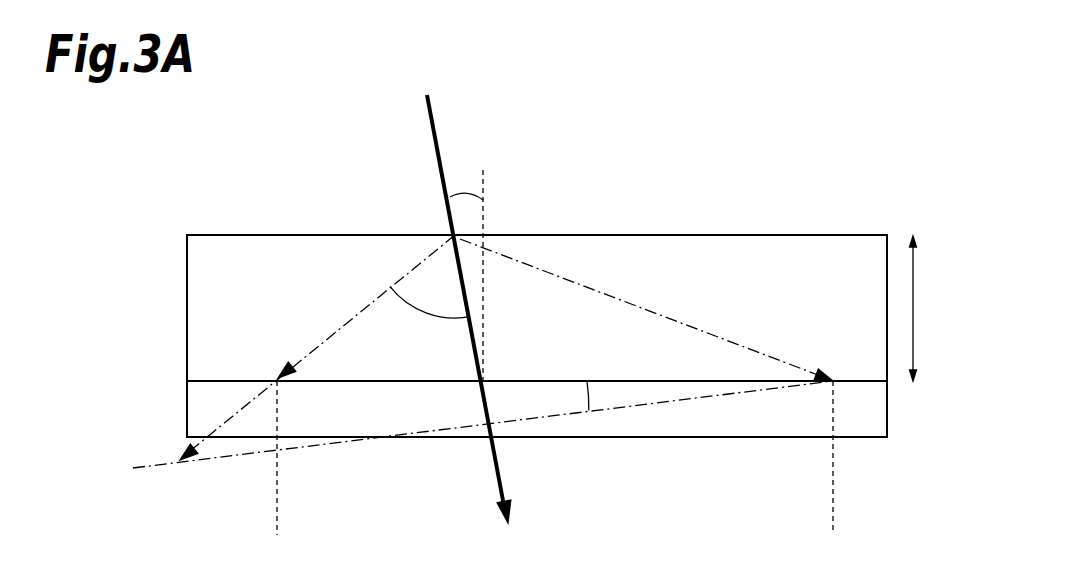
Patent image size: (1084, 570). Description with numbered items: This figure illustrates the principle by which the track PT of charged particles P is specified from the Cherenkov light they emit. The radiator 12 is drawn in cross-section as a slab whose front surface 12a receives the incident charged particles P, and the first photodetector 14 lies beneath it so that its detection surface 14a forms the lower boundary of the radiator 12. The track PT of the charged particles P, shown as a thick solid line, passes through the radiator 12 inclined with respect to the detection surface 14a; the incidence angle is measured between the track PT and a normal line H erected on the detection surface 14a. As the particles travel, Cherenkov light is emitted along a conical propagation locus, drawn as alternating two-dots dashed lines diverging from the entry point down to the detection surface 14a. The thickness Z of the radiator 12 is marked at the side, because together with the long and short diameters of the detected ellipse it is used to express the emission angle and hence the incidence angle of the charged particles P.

The radiator 12 is at (207, 307).
The front surface 12a is at (212, 235).
The first photodetector 14 is at (853, 422).
The detection surface 14a is at (226, 381).
The charged particles P is at (435, 118).
The track PT is at (467, 347).
The normal line H is at (485, 218).
The thickness of the radiator Z is at (925, 308).